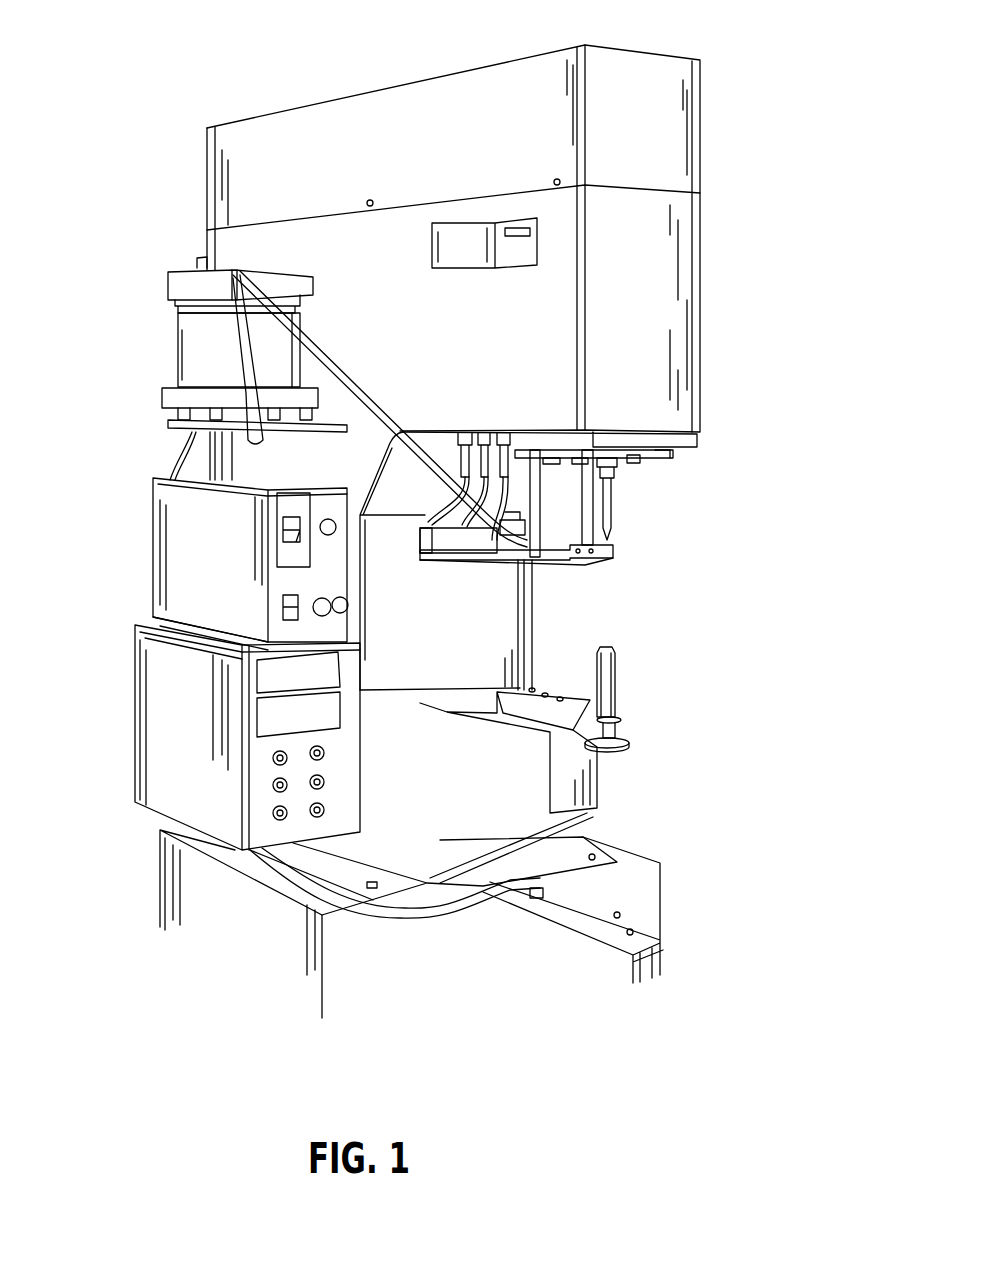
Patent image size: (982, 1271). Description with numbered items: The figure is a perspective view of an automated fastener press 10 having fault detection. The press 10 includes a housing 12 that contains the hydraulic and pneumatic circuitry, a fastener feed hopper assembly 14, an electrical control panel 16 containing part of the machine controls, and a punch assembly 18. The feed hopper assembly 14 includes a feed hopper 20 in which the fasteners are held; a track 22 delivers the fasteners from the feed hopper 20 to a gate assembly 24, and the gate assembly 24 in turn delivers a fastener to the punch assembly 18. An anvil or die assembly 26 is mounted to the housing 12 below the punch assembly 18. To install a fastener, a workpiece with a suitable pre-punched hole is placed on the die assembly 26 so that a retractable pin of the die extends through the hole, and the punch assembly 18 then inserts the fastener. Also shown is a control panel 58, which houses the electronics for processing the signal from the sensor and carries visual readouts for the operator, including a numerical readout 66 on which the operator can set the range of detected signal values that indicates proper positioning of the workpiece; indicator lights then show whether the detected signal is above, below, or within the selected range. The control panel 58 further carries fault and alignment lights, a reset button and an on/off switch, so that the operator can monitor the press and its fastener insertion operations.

The automated fastener press 10 is at (748, 352).
The housing 12 is at (672, 280).
The fastener feed hopper assembly 14 is at (190, 337).
The electrical control panel 16 is at (183, 575).
The punch assembly 18 is at (617, 507).
The feed hopper 20 is at (167, 278).
The track 22 is at (366, 403).
The gate assembly 24 is at (561, 566).
The die assembly 26 is at (625, 672).
The control panel 58 is at (167, 715).
The numerical readout 66 is at (473, 218).